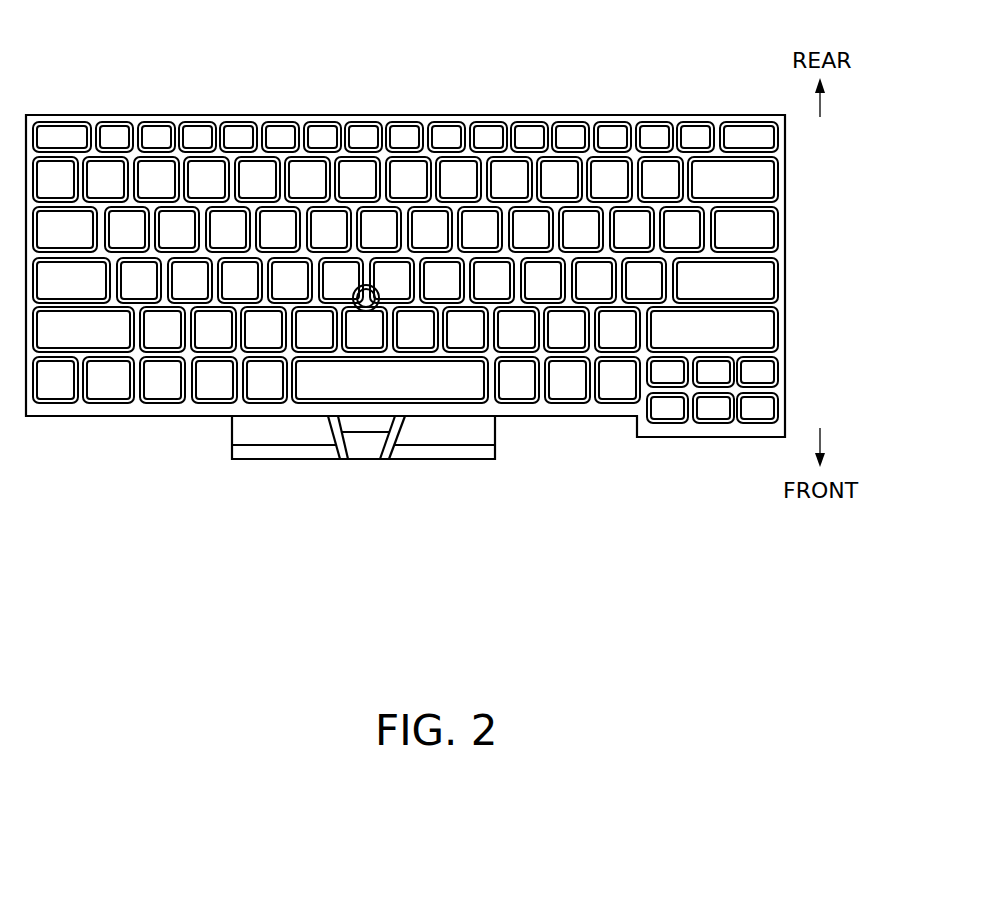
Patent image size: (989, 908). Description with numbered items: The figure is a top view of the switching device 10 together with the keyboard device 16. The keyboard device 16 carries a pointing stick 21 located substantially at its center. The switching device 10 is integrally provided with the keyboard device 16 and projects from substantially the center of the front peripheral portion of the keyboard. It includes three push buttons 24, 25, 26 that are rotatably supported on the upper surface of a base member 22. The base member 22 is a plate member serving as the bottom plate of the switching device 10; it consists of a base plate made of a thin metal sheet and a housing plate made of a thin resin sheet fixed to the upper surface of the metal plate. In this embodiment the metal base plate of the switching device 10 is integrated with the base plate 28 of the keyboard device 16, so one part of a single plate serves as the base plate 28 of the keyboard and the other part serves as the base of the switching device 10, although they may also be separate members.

The switching device 10 is at (426, 500).
The keyboard device 16 is at (105, 96).
The pointing stick 21 is at (370, 287).
The base member 22 is at (483, 452).
The push button 24 is at (267, 452).
The push button 25 is at (362, 452).
The push button 26 is at (444, 492).
The base plate 28 is at (135, 411).